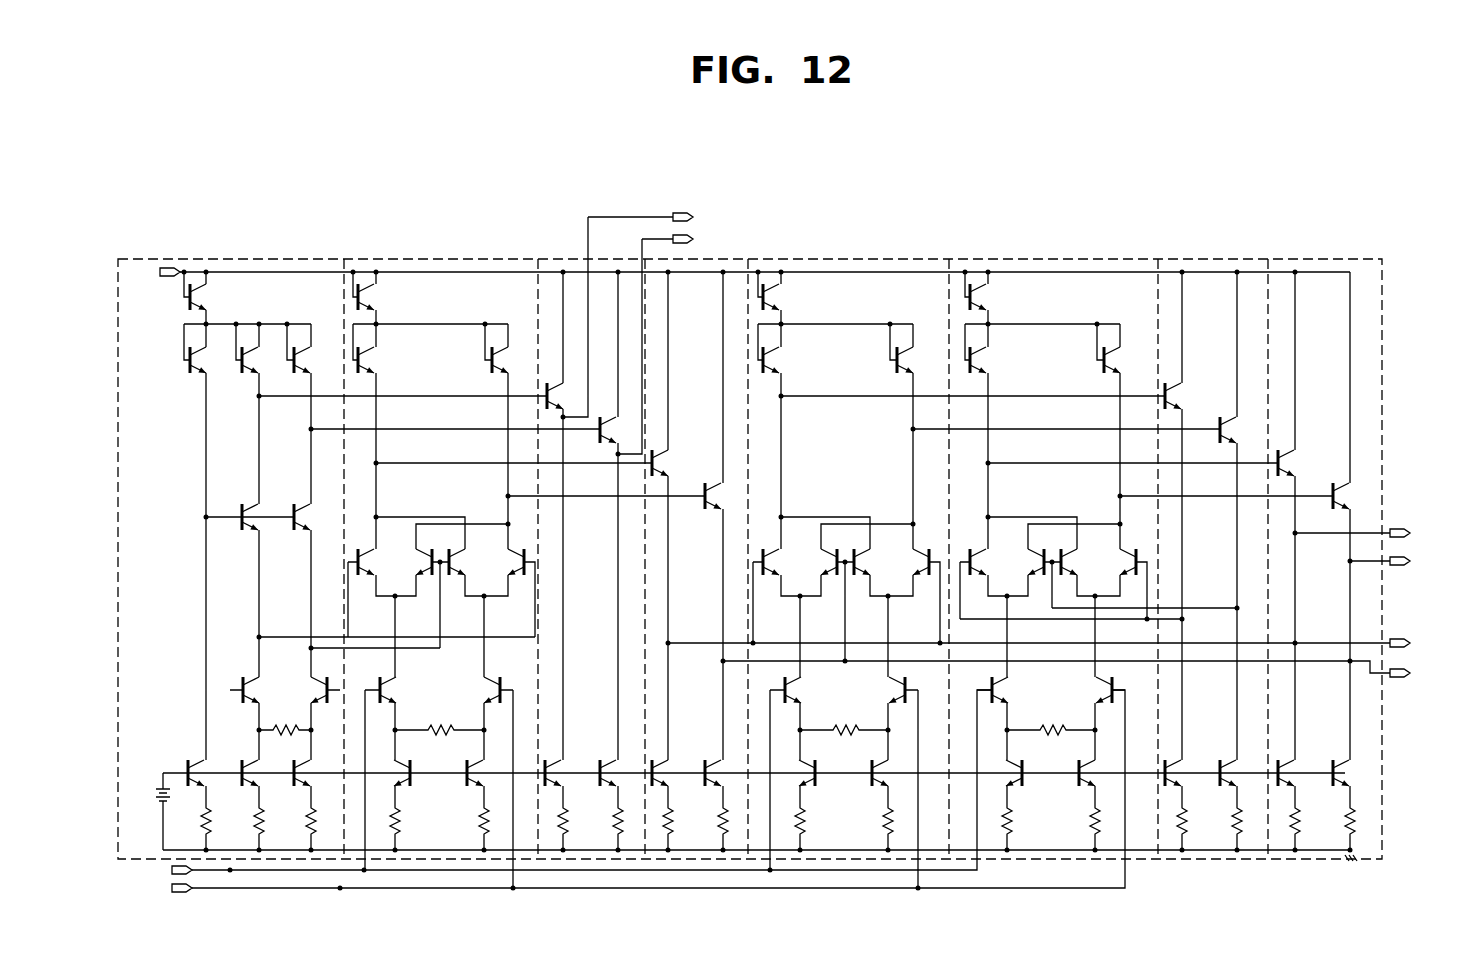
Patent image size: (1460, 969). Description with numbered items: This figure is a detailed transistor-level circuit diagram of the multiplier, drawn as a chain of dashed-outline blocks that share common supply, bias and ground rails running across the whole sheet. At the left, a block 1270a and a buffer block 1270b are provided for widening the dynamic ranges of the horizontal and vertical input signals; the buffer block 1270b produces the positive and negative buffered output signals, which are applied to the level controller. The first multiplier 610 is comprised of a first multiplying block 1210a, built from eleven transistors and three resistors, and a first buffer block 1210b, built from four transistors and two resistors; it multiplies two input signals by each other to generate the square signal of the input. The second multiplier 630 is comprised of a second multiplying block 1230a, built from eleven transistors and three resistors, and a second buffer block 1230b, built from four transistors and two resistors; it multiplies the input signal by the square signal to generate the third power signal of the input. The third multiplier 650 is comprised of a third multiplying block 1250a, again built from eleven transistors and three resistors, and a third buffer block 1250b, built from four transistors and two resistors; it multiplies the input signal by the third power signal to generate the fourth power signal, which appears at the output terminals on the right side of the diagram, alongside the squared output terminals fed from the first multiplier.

The first multiplier 610 is at (1133, 206).
The second multiplier 630 is at (782, 553).
The third multiplier 650 is at (782, 553).
The block 1270a is at (248, 259).
The first multiplying block 1210a is at (442, 259).
The buffer block 1270b is at (566, 258).
The first buffer block 1210b is at (715, 258).
The second multiplying block 1230a is at (912, 259).
The third multiplying block 1250a is at (1055, 259).
The second buffer block 1230b is at (1208, 259).
The third buffer block 1250b is at (1324, 259).